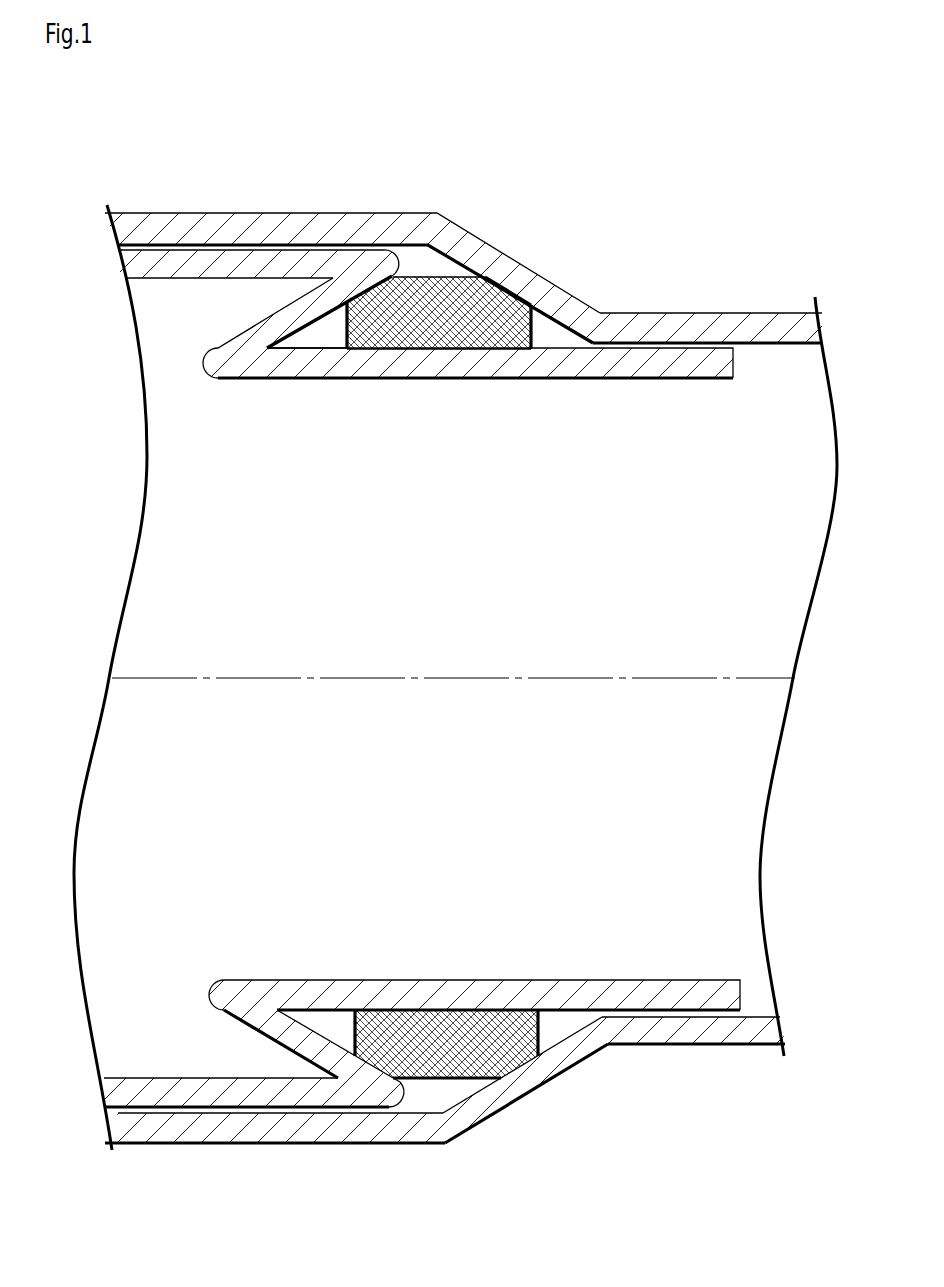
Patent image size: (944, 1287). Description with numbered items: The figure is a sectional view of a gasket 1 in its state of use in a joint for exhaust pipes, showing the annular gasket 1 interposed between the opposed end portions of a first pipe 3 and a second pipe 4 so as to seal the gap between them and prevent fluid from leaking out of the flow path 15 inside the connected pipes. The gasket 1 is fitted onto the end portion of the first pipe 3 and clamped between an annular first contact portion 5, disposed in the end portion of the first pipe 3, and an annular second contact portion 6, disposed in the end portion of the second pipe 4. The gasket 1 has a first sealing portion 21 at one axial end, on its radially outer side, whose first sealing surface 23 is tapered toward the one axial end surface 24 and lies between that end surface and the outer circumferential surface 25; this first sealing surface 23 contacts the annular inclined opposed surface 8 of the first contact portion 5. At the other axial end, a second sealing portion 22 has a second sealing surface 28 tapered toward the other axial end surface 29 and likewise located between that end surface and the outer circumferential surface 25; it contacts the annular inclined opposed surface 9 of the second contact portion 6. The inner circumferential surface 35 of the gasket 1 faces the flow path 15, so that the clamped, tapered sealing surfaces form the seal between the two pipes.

The gasket 1 is at (340, 328).
The first pipe 3 is at (187, 258).
The second pipe 4 is at (740, 313).
The first contact portion 5 is at (426, 275).
The second contact portion 6 is at (480, 237).
The opposed surface 8 is at (388, 291).
The opposed surface 9 is at (518, 304).
The flow path 15 is at (495, 652).
The first sealing portion 21 is at (368, 1098).
The second sealing portion 22 is at (445, 1100).
The first sealing surface 23 is at (338, 1070).
The one axial end surface 24 is at (355, 1020).
The outer circumferential surface 25 is at (435, 1080).
The second sealing surface 28 is at (522, 1060).
The other axial end surface 29 is at (551, 1025).
The inner circumferential surface 35 is at (423, 1008).